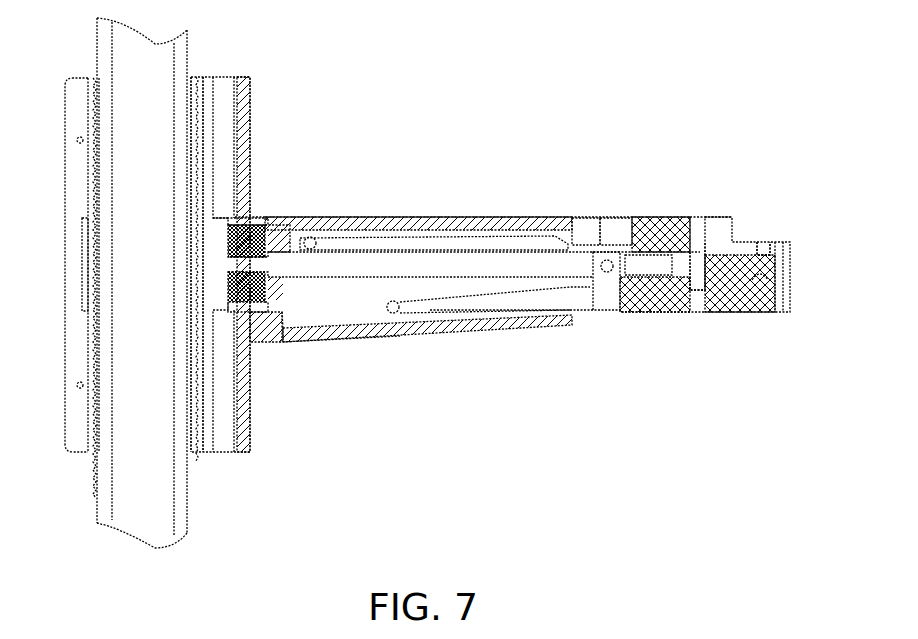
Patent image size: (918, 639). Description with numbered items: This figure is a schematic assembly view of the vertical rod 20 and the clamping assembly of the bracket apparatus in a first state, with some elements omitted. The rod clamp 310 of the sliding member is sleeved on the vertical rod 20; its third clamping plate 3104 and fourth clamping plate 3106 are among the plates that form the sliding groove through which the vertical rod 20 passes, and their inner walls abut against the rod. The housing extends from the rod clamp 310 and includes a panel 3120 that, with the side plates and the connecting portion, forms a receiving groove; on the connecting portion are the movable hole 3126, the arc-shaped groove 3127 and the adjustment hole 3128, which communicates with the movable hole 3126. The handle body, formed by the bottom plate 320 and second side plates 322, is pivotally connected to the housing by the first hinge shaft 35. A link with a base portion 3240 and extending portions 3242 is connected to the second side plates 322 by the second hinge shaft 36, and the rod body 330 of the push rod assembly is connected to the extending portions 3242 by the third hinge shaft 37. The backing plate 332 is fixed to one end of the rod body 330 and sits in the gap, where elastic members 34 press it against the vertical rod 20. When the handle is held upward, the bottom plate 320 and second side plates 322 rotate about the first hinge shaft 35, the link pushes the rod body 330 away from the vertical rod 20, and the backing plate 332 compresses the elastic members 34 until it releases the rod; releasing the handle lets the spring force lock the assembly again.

The vertical rod 20 is at (165, 503).
The rod clamp 310 is at (245, 97).
The third clamping plate 3104 is at (225, 95).
The fourth clamping plate 3106 is at (80, 90).
The panel 3120 is at (437, 226).
The movable hole 3126 is at (740, 268).
The arc-shaped groove 3127 is at (697, 262).
The adjustment hole 3128 is at (763, 252).
The bottom plate 320 is at (354, 330).
The second side plate 322 is at (293, 315).
The base portion 3240 is at (478, 303).
The extending portion 3242 is at (604, 300).
The rod body 330 is at (507, 272).
The backing plate 332 is at (205, 437).
The elastic member 34 is at (258, 242).
The first hinge shaft 35 is at (314, 237).
The second hinge shaft 36 is at (396, 313).
The third hinge shaft 37 is at (612, 270).